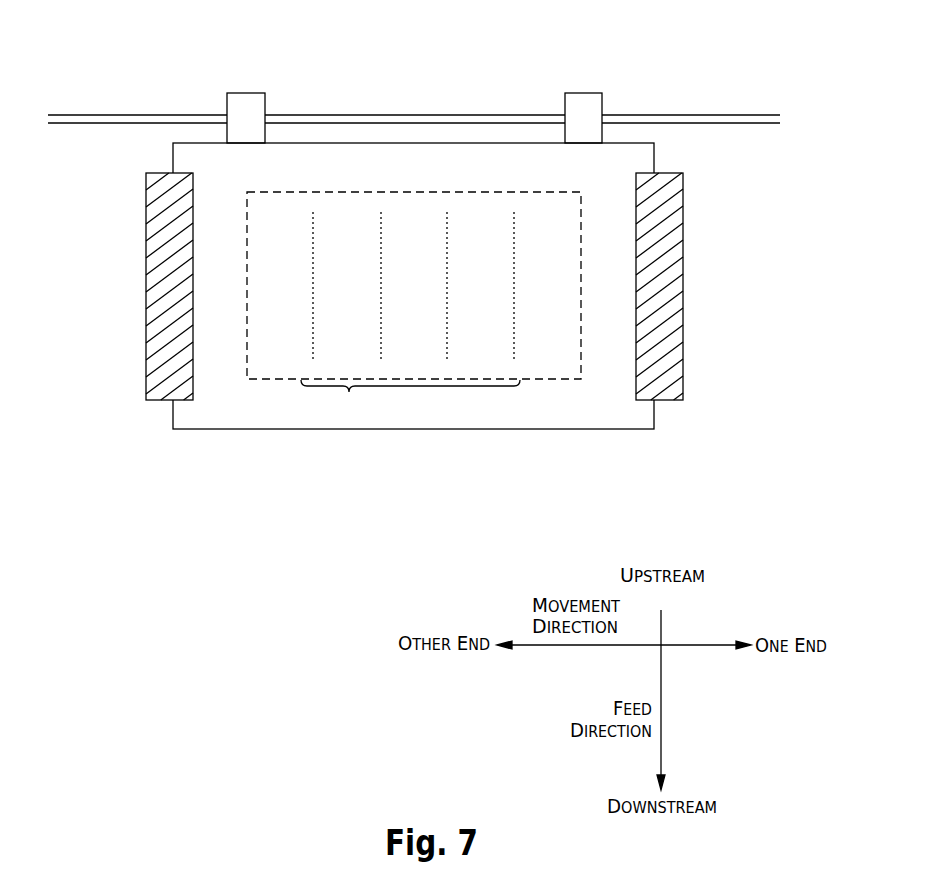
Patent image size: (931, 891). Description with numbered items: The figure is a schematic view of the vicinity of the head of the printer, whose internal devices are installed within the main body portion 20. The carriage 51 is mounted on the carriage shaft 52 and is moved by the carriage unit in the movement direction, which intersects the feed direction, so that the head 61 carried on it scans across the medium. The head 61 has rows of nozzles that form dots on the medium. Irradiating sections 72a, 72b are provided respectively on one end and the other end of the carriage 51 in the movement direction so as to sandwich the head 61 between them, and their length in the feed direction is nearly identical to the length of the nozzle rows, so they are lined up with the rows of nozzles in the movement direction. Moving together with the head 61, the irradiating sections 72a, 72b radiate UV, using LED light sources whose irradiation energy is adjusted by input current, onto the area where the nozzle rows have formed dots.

The main body portion 20 is at (540, 435).
The carriage 51 is at (425, 143).
The carriage shaft 52 is at (698, 115).
The head 61 is at (337, 192).
The irradiating section 72a is at (683, 272).
The irradiating section 72b is at (146, 275).